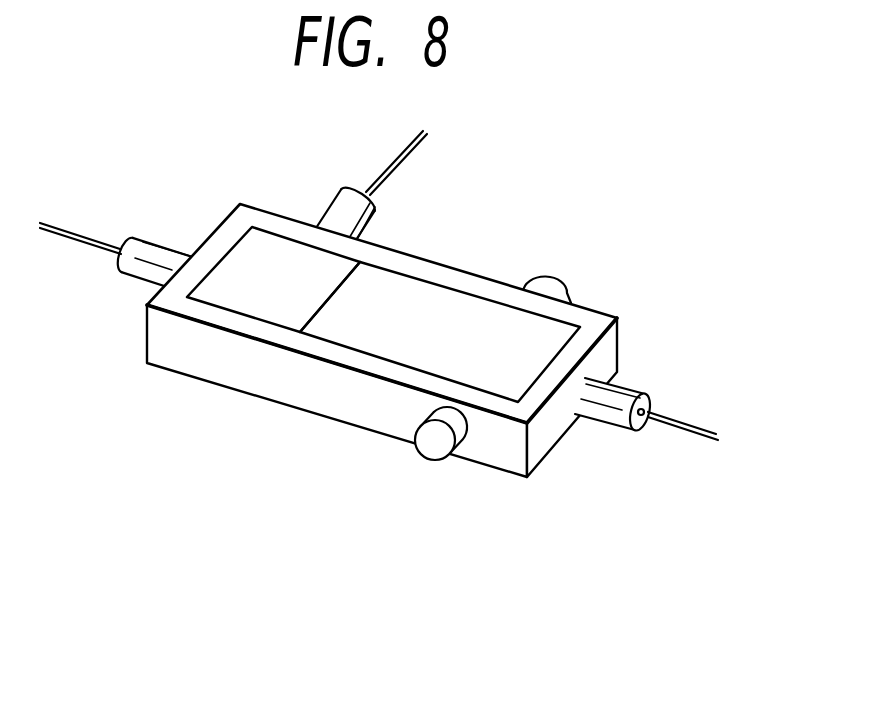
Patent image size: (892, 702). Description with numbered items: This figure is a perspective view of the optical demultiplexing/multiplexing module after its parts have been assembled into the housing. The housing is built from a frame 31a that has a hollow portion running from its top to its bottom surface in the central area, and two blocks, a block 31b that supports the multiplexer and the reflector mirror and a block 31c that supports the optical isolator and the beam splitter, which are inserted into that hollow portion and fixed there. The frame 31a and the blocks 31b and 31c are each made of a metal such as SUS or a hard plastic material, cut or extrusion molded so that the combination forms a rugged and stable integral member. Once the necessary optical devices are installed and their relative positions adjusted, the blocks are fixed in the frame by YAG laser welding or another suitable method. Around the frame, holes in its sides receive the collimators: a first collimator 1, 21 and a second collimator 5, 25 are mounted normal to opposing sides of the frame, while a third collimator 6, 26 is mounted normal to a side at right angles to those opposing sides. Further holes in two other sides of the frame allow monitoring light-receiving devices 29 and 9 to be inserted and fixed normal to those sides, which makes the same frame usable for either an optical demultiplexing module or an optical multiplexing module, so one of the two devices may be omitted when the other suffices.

The first collimator 1 is at (118, 275).
The first collimator 21 is at (148, 267).
The third collimator 6 is at (401, 198).
The third collimator 26 is at (368, 215).
The second collimator 5 is at (660, 388).
The second collimator 25 is at (623, 392).
The monitoring light-receiving device 29 is at (558, 282).
The monitoring light-receiving device 9 is at (433, 445).
The frame 31a is at (233, 371).
The block 31b is at (280, 250).
The block 31c is at (473, 313).